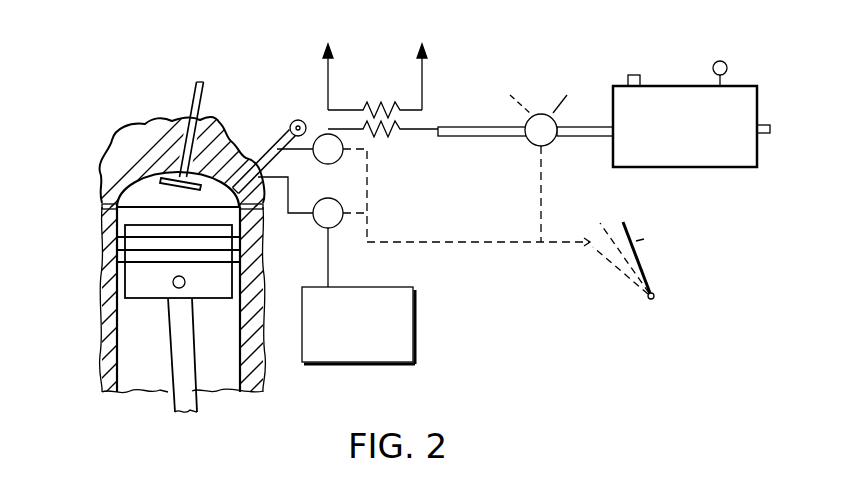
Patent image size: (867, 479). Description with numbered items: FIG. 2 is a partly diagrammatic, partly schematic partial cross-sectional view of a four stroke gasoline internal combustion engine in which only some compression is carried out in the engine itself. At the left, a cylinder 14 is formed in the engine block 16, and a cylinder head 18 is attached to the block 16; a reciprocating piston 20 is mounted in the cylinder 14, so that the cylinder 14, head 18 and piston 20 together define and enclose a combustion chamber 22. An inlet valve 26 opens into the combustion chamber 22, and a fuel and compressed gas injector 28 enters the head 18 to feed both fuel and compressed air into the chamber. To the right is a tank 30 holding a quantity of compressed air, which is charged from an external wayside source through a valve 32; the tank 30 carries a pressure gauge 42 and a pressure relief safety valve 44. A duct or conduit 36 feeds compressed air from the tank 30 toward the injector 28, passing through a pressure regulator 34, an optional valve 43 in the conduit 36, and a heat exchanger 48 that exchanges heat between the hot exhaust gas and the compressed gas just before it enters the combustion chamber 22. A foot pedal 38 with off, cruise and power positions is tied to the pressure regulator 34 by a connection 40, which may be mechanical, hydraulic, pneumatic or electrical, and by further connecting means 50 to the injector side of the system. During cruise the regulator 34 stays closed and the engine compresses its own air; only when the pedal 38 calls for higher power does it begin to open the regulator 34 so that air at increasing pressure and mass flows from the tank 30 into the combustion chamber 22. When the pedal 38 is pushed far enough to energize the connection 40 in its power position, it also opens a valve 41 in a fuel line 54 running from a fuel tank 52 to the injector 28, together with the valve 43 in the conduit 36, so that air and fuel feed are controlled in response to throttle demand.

The cylinder 14 is at (238, 375).
The engine block 16 is at (107, 333).
The cylinder head 18 is at (110, 170).
The piston 20 is at (130, 270).
The combustion chamber 22 is at (127, 215).
The inlet valve 26 is at (188, 189).
The fuel and compressed gas injector 28 is at (259, 167).
The tank 30 is at (685, 168).
The valve 32 is at (768, 138).
The pressure regulator 34 is at (548, 146).
The conduit 36 is at (481, 125).
The foot pedal 38 is at (646, 270).
The connection 40 is at (541, 193).
The valve 41 is at (315, 226).
The pressure gauge 42 is at (727, 68).
The valve 43 is at (336, 164).
The pressure relief safety valve 44 is at (640, 78).
The heat exchanger 48 is at (381, 94).
The connecting means 50 is at (425, 242).
The fuel tank 52 is at (368, 334).
The fuel line 54 is at (329, 280).